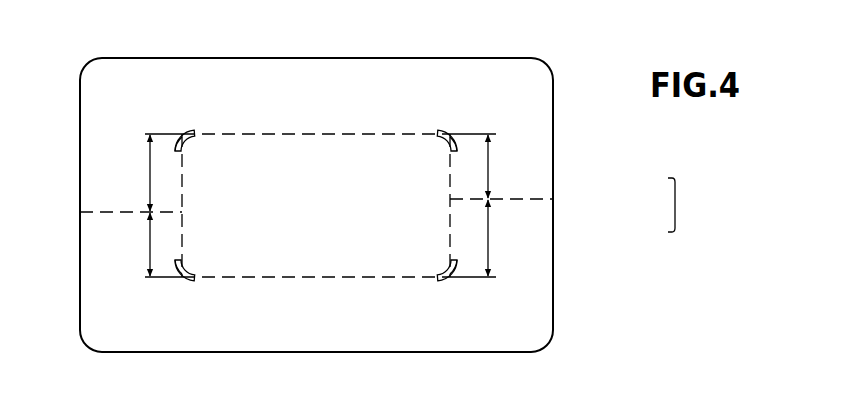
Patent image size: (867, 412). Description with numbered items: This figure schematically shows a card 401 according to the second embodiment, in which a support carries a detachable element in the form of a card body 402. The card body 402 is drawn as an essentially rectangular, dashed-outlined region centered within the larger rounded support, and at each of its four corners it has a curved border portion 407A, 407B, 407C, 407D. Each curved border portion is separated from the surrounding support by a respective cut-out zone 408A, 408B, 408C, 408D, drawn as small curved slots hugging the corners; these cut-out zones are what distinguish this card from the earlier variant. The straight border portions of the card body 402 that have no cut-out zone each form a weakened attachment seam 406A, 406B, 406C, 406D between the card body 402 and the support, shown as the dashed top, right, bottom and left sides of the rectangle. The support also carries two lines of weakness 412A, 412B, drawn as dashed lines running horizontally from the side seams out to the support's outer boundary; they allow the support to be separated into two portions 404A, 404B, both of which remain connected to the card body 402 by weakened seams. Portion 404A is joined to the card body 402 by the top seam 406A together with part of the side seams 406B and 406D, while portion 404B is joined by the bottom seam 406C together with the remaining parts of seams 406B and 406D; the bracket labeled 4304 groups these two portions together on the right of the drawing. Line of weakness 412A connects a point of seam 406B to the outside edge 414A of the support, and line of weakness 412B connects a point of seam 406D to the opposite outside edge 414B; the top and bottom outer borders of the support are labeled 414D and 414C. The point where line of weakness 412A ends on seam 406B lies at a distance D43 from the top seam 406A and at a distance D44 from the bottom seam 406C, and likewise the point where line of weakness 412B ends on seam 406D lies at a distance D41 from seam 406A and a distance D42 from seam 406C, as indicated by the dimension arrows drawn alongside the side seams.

The card 401 is at (557, 106).
The card body 402 is at (315, 206).
The portion of the support 404A is at (542, 128).
The portion of the support 404B is at (540, 228).
The portion pair 4304 is at (695, 205).
The weakened attachment seam 406A is at (319, 135).
The weakened attachment seam 406B is at (451, 233).
The weakened attachment seam 406C is at (320, 277).
The weakened attachment seam 406D is at (181, 233).
The curved border portion 407A is at (190, 130).
The curved border portion 407B is at (444, 128).
The curved border portion 407C is at (447, 283).
The curved border portion 407D is at (188, 283).
The cut-out zone 408A is at (183, 140).
The cut-out zone 408B is at (451, 140).
The cut-out zone 408C is at (452, 277).
The cut-out zone 408D is at (182, 275).
The line of weakness 412A is at (538, 199).
The line of weakness 412B is at (105, 212).
The outside edge 414A is at (554, 245).
The outside edge 414B is at (78, 242).
The bottom edge 414C is at (430, 352).
The top edge 414D is at (432, 58).
The distance D41 is at (145, 172).
The distance D42 is at (145, 245).
The distance D43 is at (490, 166).
The distance D44 is at (490, 238).